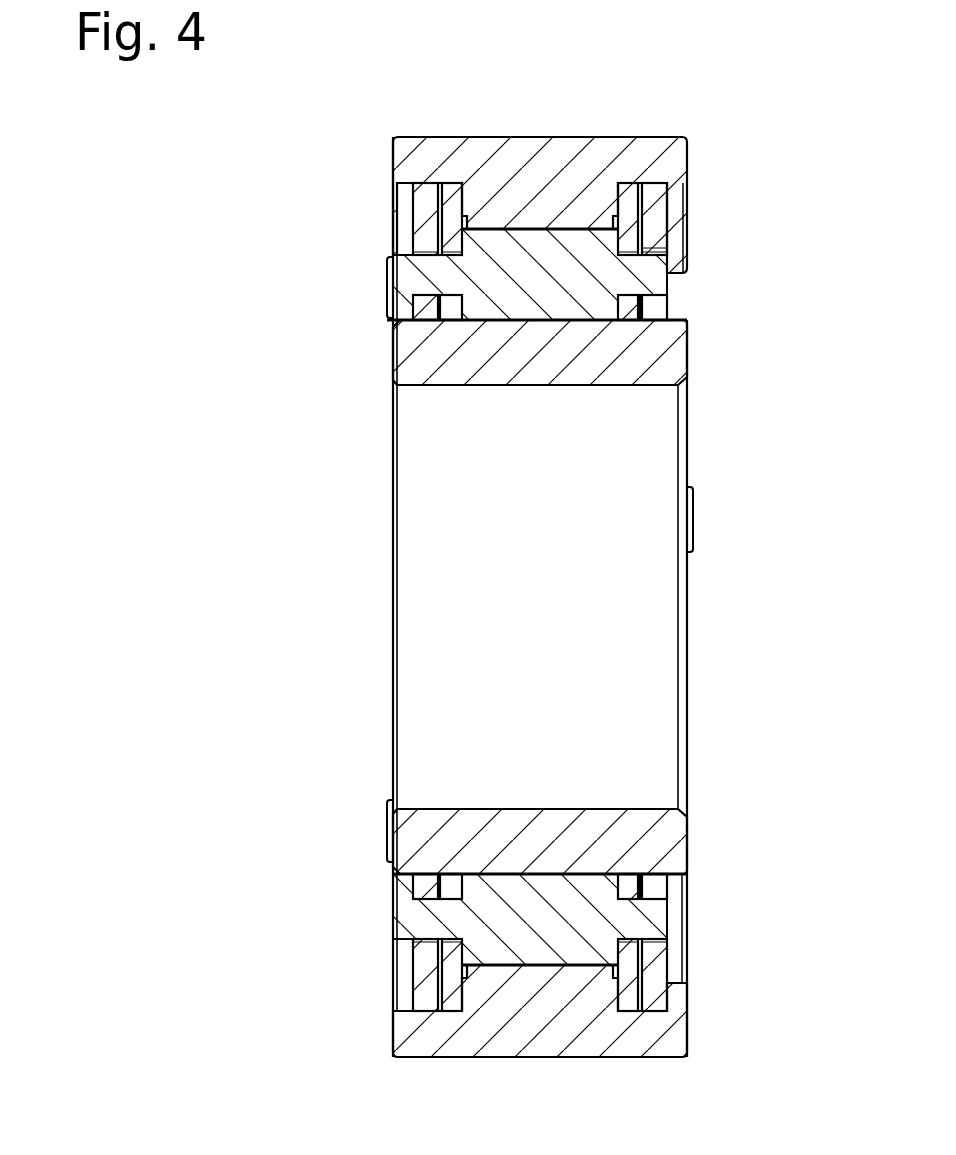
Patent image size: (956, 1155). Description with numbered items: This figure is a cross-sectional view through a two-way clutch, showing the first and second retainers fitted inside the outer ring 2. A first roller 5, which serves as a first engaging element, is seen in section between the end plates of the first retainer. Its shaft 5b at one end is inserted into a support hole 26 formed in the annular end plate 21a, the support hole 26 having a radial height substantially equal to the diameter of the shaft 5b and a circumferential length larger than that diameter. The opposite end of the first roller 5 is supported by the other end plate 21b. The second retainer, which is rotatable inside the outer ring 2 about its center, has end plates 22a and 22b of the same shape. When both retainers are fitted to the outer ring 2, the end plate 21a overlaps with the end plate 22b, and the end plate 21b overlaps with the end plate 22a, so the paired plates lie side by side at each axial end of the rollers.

The outer ring 2 is at (548, 147).
The first roller 5 is at (548, 248).
The shaft 5b is at (653, 278).
The end plate 21a is at (657, 205).
The end plate 21b is at (453, 202).
The end plate 22a is at (425, 193).
The end plate 22b is at (628, 193).
The support hole 26 is at (653, 250).